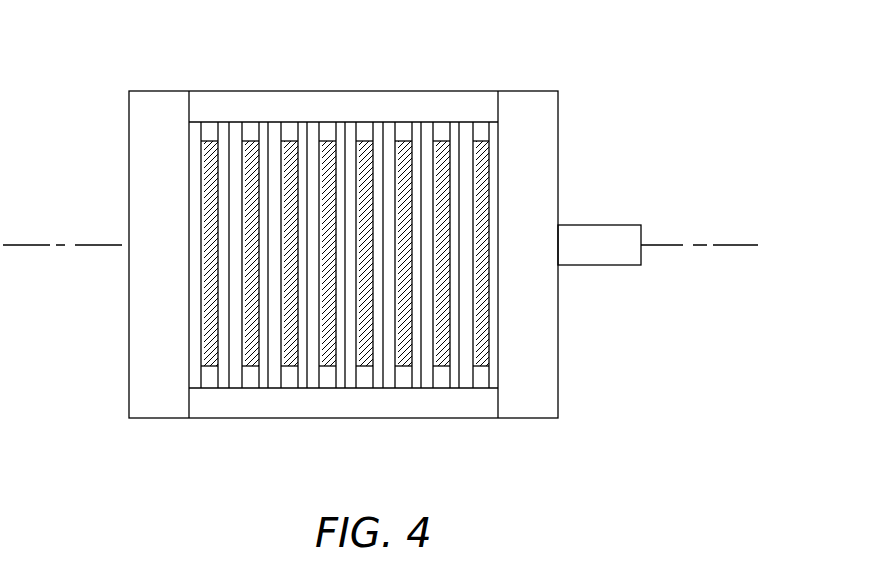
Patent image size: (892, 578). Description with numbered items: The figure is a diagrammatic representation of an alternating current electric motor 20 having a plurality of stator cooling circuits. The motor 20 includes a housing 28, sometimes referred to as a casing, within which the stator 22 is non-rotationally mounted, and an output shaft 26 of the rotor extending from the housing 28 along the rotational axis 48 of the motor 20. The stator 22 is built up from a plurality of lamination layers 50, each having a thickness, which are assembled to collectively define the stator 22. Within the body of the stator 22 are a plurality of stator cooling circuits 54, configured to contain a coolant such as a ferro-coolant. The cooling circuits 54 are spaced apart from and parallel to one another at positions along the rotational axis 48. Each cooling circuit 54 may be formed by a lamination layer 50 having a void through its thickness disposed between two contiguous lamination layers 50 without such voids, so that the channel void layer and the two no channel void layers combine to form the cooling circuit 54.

The alternating current electric motor 20 is at (645, 95).
The stator 22 is at (266, 98).
The output shaft 26 is at (613, 224).
The housing 28 is at (441, 82).
The rotational axis 48 is at (738, 250).
The lamination layers 50 is at (275, 378).
The stator cooling circuits 54 is at (248, 352).